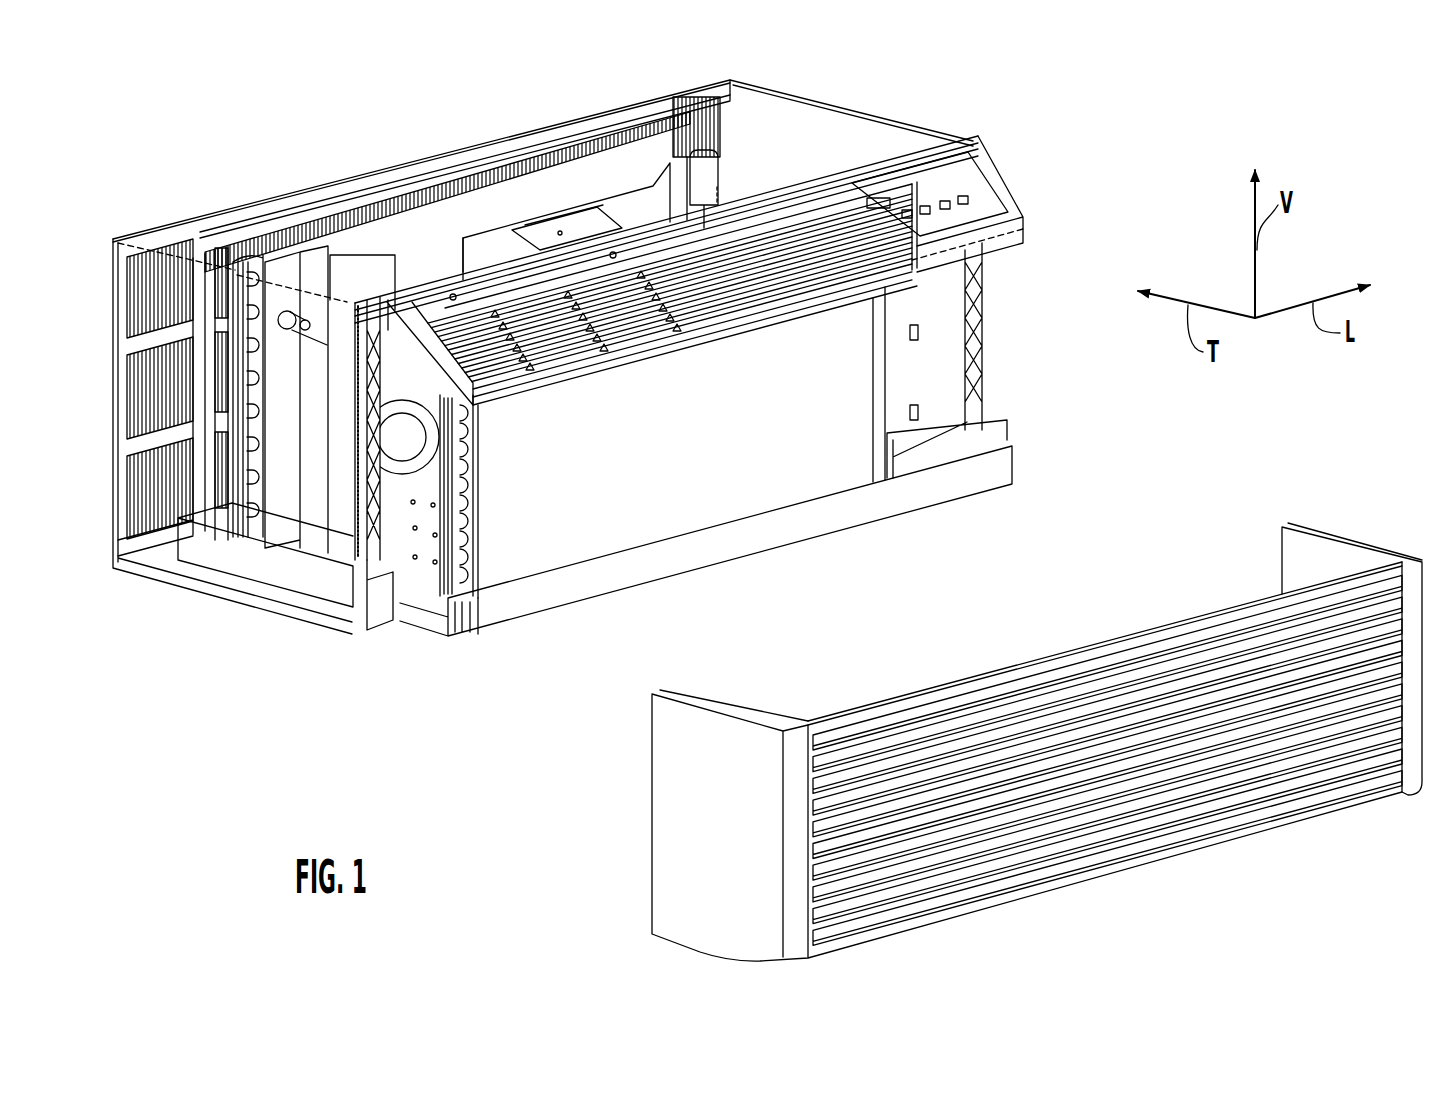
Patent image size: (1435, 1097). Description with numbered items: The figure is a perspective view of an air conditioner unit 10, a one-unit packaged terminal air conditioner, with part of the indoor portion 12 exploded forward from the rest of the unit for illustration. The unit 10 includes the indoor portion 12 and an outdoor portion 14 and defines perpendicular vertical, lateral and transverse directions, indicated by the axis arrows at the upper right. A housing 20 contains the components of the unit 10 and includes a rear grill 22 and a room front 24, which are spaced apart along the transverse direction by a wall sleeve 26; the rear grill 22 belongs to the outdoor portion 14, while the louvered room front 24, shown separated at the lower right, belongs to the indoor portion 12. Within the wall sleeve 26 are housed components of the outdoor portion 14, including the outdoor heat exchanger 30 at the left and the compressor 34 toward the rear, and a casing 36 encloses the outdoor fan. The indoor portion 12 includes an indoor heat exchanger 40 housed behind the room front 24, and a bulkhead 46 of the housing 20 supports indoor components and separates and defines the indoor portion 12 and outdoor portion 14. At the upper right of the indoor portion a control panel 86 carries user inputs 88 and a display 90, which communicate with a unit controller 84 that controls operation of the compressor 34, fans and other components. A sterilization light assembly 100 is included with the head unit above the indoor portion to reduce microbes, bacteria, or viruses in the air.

The air conditioner unit 10 is at (764, 509).
The indoor portion 12 is at (595, 403).
The outdoor portion 14 is at (232, 607).
The housing 20 is at (595, 399).
The rear grill 22 is at (560, 346).
The room front 24 is at (1010, 664).
The wall sleeve 26 is at (828, 122).
The outdoor heat exchanger 30 is at (237, 453).
The compressor 34 is at (710, 180).
The casing 36 is at (420, 233).
The indoor heat exchanger 40 is at (515, 548).
The bulkhead 46 is at (353, 530).
The unit controller 84 is at (967, 185).
The control panel 86 is at (964, 151).
The user inputs 88 is at (967, 193).
The display 90 is at (890, 200).
The sterilization light assembly 100 is at (707, 350).